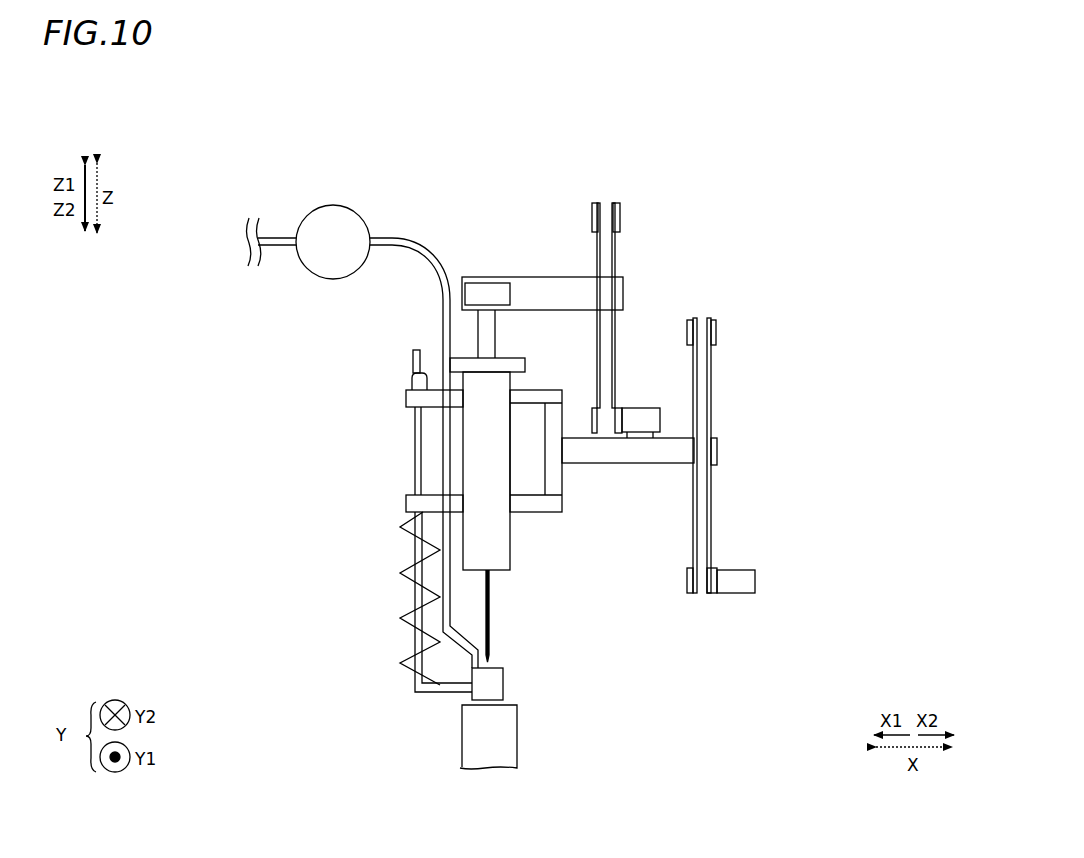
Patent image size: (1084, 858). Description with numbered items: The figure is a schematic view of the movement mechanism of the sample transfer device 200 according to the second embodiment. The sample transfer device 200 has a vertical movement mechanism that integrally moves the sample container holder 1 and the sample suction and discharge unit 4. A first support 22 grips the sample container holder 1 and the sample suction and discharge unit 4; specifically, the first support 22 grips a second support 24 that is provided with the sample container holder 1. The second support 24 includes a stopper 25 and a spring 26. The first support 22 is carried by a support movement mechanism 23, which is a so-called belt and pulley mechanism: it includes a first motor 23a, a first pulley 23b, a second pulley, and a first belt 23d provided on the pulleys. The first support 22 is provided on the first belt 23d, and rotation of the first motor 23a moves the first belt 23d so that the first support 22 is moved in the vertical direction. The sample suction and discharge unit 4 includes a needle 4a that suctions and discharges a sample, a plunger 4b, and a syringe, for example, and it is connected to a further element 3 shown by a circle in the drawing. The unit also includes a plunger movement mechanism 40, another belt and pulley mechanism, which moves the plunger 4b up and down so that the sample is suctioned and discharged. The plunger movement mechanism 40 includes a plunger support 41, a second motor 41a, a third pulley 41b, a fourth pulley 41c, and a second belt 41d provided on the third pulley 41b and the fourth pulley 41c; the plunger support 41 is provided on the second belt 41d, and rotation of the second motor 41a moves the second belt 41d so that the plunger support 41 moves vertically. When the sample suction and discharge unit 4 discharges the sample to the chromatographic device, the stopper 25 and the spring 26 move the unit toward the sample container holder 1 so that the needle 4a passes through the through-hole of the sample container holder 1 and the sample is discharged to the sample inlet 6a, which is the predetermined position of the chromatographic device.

The sample container holder 1 is at (505, 672).
The pump 3 is at (333, 205).
The sample suction and discharge unit 4 is at (515, 553).
The needle 4a is at (491, 627).
The plunger 4b is at (485, 277).
The sample inlet 6a is at (478, 705).
The first support 22 is at (566, 518).
The support movement mechanism 23 is at (748, 412).
The first motor 23a is at (740, 595).
The first pulley 23b is at (688, 590).
The first belt 23d is at (716, 325).
The second support 24 is at (412, 358).
The stopper 25 is at (410, 384).
The spring 26 is at (400, 636).
The plunger movement mechanism 40 is at (643, 232).
The plunger support 41 is at (540, 277).
The second motor 41a is at (640, 408).
The third pulley 41b is at (593, 412).
The fourth pulley 41c is at (594, 215).
The second belt 41d is at (616, 250).
The sample transfer device 200 is at (753, 237).